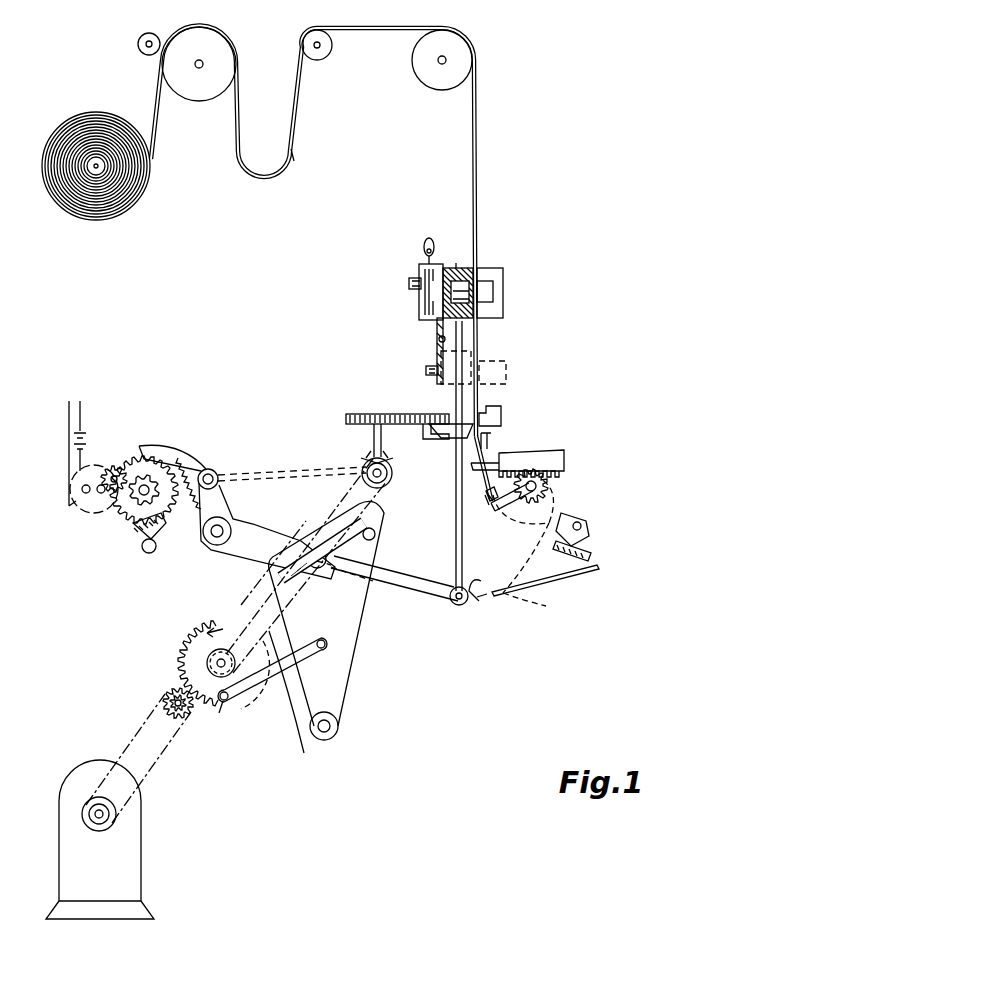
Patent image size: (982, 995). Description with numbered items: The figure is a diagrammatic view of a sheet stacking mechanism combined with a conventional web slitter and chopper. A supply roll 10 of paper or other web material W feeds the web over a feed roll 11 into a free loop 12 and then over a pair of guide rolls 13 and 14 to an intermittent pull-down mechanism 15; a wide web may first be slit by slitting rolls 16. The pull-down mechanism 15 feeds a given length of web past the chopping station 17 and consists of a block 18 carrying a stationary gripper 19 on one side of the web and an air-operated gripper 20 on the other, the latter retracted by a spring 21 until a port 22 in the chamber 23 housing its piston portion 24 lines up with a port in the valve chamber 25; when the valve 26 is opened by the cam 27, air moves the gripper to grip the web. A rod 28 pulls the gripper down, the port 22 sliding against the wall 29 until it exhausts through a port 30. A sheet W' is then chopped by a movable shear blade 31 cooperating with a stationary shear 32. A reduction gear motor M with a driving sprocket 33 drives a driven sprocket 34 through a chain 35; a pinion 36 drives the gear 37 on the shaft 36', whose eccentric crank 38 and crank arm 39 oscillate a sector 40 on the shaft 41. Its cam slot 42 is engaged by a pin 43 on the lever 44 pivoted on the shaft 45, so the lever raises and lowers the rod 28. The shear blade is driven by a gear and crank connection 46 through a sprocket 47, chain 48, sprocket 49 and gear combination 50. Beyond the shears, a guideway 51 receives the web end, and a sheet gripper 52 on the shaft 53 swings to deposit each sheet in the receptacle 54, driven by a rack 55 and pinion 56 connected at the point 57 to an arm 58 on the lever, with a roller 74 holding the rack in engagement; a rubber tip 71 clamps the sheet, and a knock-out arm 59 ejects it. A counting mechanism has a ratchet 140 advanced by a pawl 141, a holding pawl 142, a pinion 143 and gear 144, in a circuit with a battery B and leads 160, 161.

The web material W is at (313, 230).
The sheet W' is at (551, 604).
The supply roll 10 is at (110, 218).
The feed roll 11 is at (203, 92).
The free loop 12 is at (293, 148).
The guide roll 13 is at (320, 58).
The guide roll 14 is at (428, 89).
The intermittent pull-down mechanism 15 is at (467, 381).
The slitting rolls 16 is at (136, 48).
The chopping station 17 is at (492, 402).
The block 18 is at (488, 268).
The stationary gripper 19 is at (492, 294).
The air-operated gripper 20 is at (476, 262).
The spring 21 is at (437, 318).
The port 22 is at (448, 262).
The chamber 23 is at (470, 310).
The piston portion 24 is at (458, 266).
The valve chamber 25 is at (422, 292).
The valve 26 is at (410, 283).
The cam 27 is at (423, 250).
The rod 28 is at (455, 400).
The wall 29 is at (434, 330).
The port 30 is at (425, 370).
The movable shear blade 31 is at (452, 442).
The stationary shear 32 is at (470, 428).
The driving sprocket 33 is at (104, 830).
The driven sprocket 34 is at (165, 690).
The chain 35 is at (160, 760).
The pinion 36 is at (214, 696).
The shaft 36' is at (181, 659).
The gear 37 is at (236, 716).
The crank 38 is at (220, 712).
The crank arm 39 is at (291, 696).
The sector 40 is at (350, 685).
The shaft 41 is at (338, 725).
The cam slot 42 is at (375, 533).
The pin 43 is at (330, 565).
The lever 44 is at (410, 586).
The shaft 45 is at (212, 544).
The gear and crank connection 46 is at (424, 432).
The sprocket 47 is at (248, 700).
The chain 48 is at (248, 598).
The sprocket 49 is at (332, 499).
The gear combination 50 is at (365, 438).
The guideway 51 is at (488, 440).
The sheet gripper 52 is at (560, 484).
The shaft 53 is at (540, 478).
The receptacle 54 is at (598, 572).
The rack 55 is at (560, 455).
The pinion 56 is at (505, 518).
The point 57 is at (214, 470).
The arm 58 is at (226, 505).
The knock-out arm 59 is at (588, 525).
The rubber tip 71 is at (488, 285).
The roller 74 is at (480, 480).
The ratchet 140 is at (115, 465).
The spring-pressed pawl 141 is at (165, 452).
The second spring-pressed pawl 142 is at (153, 553).
The pinion 143 is at (143, 455).
The gear 144 is at (100, 465).
The lead 160 is at (68, 410).
The lead 161 is at (79, 405).
The battery B is at (87, 432).
The reduction gear motor M is at (140, 870).